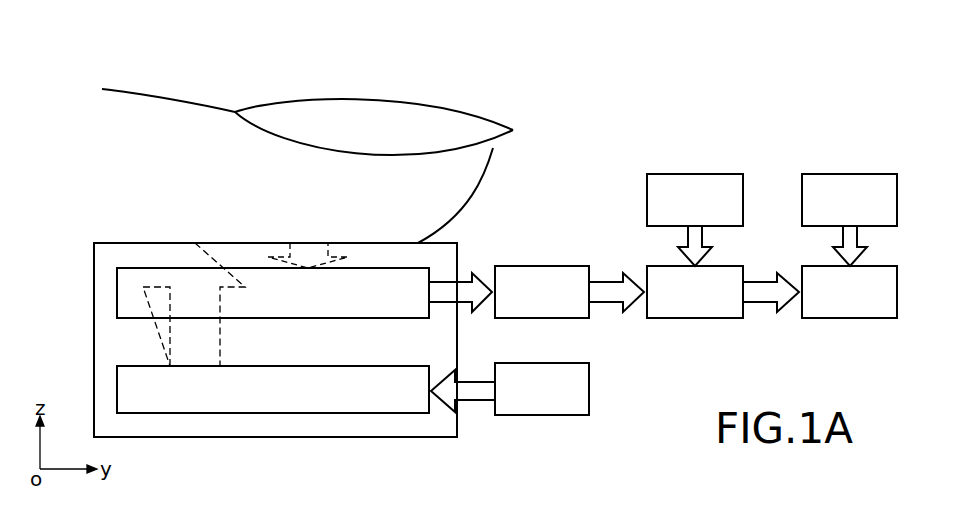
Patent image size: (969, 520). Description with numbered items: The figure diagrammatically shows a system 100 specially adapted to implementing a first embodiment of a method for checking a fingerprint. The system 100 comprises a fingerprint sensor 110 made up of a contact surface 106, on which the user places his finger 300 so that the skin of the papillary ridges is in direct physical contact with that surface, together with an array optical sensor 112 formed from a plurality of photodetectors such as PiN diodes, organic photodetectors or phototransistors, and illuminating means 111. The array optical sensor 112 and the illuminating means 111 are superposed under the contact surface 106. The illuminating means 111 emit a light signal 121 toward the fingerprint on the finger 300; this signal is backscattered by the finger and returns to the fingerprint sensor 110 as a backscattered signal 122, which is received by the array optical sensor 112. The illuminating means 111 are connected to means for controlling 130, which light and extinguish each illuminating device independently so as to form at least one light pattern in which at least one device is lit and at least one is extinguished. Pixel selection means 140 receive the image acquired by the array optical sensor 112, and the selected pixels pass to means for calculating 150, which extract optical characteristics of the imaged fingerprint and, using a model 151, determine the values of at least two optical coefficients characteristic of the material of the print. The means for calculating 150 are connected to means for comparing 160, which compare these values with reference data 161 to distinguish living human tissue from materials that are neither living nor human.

The system 100 is at (627, 109).
The fingerprint sensor 110 is at (78, 231).
The illuminating means 111 is at (125, 392).
The array optical sensor 112 is at (125, 292).
The light signal 121 is at (182, 350).
The backscattered signal 122 is at (292, 249).
The contact surface 106 is at (283, 242).
The finger 300 is at (463, 180).
The means for controlling 130 is at (550, 405).
The pixel selection means 140 is at (559, 277).
The means for calculating 150 is at (688, 308).
The model 151 is at (692, 188).
The means for comparing 160 is at (850, 308).
The reference data 161 is at (850, 188).